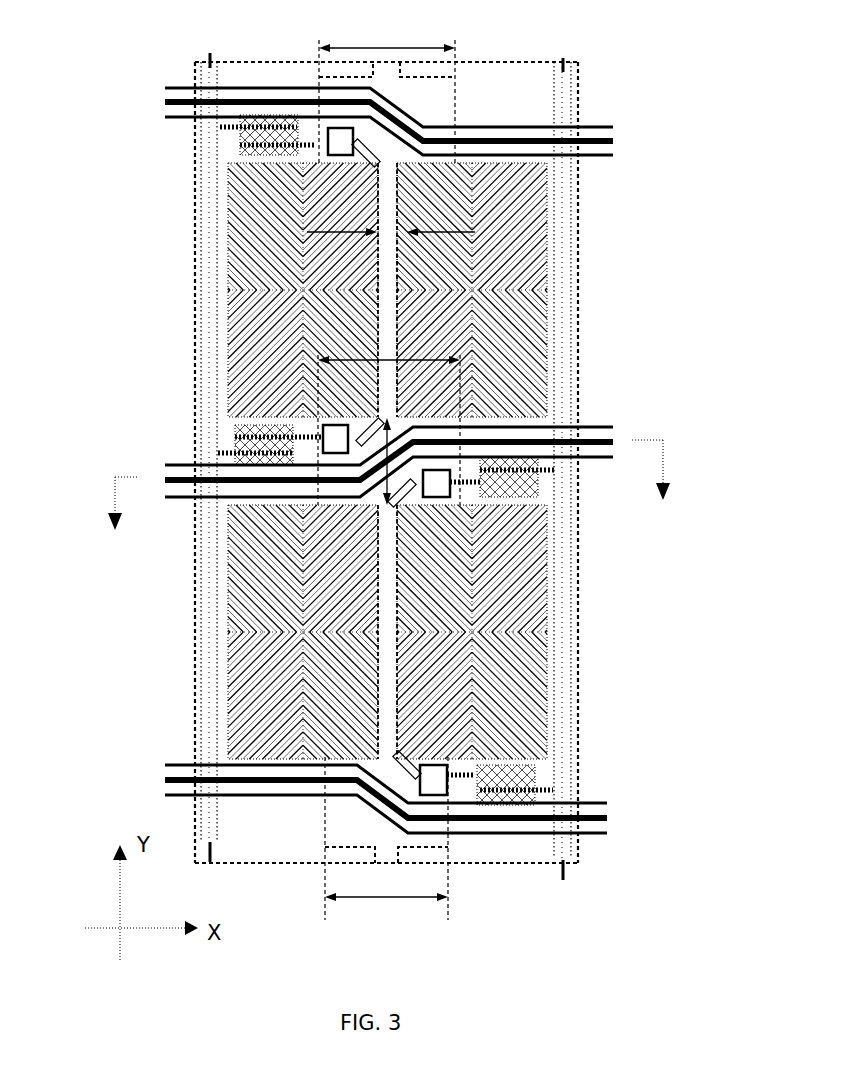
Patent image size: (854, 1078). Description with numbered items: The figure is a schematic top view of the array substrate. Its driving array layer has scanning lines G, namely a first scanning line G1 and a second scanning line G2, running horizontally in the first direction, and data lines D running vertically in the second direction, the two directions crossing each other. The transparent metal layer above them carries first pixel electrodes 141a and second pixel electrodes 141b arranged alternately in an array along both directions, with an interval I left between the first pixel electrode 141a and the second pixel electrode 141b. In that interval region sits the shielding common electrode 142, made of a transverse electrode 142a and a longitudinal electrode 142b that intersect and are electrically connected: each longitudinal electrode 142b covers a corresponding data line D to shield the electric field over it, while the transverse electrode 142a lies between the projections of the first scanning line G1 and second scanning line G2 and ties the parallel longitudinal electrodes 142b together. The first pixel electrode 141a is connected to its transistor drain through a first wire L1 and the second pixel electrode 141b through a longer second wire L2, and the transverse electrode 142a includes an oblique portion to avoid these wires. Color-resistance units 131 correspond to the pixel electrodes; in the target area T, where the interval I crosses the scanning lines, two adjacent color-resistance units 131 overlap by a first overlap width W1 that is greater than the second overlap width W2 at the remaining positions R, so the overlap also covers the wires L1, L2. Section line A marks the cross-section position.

The data line D is at (210, 60).
The scanning line G is at (441, 476).
The first scanning line G1 is at (415, 497).
The second scanning line G2 is at (598, 127).
The interval I is at (462, 443).
The first pixel electrode 141a is at (237, 273).
The second pixel electrode 141b is at (527, 285).
The shielding common electrode 142 is at (298, 462).
The transverse electrode 142a is at (193, 477).
The longitudinal electrode 142b is at (212, 373).
The color-resistance unit 131 is at (292, 852).
The target area T is at (357, 470).
The remaining positions R is at (380, 307).
The first wire L1 is at (368, 148).
The second wire L2 is at (377, 428).
The first overlap width W1 is at (389, 474).
The second overlap width W2 is at (392, 216).
The section line A- A is at (387, 502).